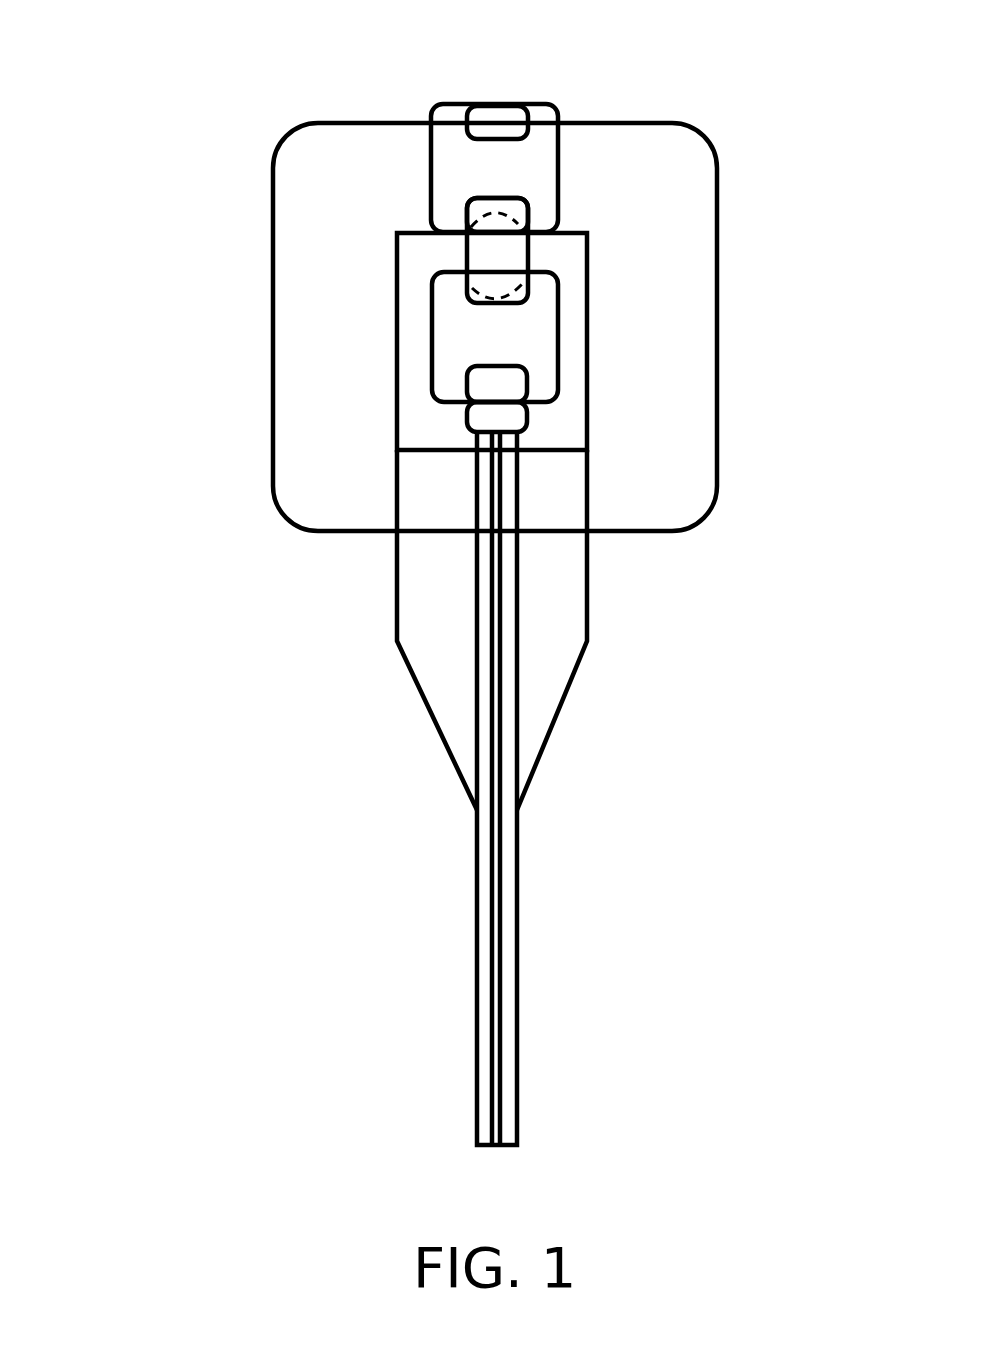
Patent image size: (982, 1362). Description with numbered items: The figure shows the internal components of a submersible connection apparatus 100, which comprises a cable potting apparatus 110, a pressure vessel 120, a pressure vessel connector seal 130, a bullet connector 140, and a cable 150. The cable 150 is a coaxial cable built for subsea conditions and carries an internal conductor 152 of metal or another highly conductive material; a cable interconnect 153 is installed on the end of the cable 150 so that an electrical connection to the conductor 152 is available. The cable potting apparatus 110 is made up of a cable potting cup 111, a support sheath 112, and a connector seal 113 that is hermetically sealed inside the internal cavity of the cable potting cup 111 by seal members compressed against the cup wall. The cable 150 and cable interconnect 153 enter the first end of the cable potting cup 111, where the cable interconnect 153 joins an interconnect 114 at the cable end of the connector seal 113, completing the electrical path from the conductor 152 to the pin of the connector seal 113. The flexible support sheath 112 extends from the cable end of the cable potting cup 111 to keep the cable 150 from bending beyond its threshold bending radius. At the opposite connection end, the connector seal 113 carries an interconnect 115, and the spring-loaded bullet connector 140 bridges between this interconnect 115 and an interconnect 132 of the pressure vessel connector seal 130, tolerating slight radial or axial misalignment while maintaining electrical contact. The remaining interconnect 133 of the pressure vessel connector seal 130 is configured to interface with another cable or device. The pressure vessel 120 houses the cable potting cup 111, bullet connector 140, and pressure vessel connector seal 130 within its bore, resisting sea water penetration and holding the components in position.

The submersible connection apparatus 100 is at (186, 67).
The cable potting apparatus 110 is at (463, 521).
The cable potting cup 111 is at (587, 357).
The support sheath 112 is at (395, 600).
The connector seal 113 is at (448, 328).
The interconnect 114 is at (468, 385).
The interconnect 115 is at (468, 293).
The pressure vessel 120 is at (317, 437).
The pressure vessel connector seal 130 is at (603, 116).
The interconnect 132 is at (515, 198).
The interconnect 133 is at (535, 103).
The bullet connector 140 is at (510, 258).
The cable 150 is at (546, 788).
The conductor 152 is at (498, 973).
The cable interconnect 153 is at (528, 405).